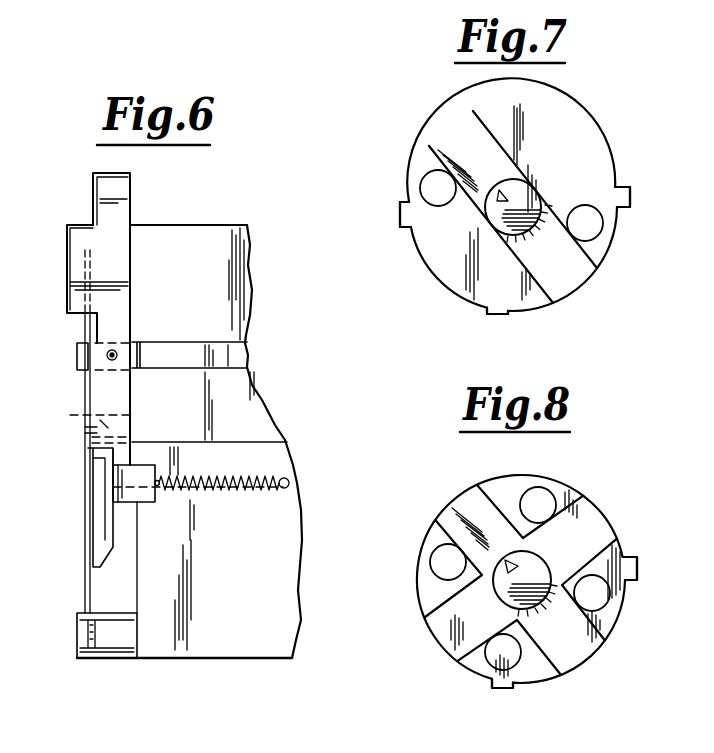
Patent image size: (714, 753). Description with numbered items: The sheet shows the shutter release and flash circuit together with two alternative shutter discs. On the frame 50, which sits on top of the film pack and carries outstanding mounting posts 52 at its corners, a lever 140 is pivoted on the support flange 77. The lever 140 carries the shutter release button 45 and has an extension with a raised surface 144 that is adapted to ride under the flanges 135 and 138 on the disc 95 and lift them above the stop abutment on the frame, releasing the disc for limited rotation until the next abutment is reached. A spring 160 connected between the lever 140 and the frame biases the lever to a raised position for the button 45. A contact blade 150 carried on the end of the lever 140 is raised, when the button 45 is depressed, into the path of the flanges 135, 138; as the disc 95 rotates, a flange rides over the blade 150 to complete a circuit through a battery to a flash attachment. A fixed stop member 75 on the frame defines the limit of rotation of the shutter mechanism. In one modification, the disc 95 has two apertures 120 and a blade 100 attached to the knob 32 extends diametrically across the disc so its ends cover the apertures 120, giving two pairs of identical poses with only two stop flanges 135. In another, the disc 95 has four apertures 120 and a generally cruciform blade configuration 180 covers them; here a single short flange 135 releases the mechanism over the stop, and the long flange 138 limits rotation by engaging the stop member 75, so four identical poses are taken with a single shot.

In FIG. 6, the lever 140 is at (132, 210).
In FIG. 6, the shutter release button 45 is at (67, 272).
In FIG. 6, the support flange 77 is at (126, 352).
In FIG. 6, the stop member 75 is at (77, 350).
In FIG. 6, the raised surface 144 is at (100, 420).
In FIG. 6, the spring 160 is at (268, 482).
In FIG. 6, the contact blade 150 is at (110, 512).
In FIG. 6, the mounting posts 52 is at (78, 625).
In FIG. 6, the frame 50 is at (232, 660).
In FIG. 7, the disc 95 is at (588, 135).
In FIG. 8, the disc 95 is at (428, 601).
In FIG. 7, the blade 100 is at (458, 162).
In FIG. 7, the apertures 120 is at (419, 188).
In FIG. 8, the apertures 120 is at (548, 492).
In FIG. 7, the stop flange 135 is at (400, 218).
In FIG. 8, the stop flange 135 is at (495, 688).
In FIG. 7, the knob 32 is at (537, 195).
In FIG. 8, the knob 32 is at (550, 556).
In FIG. 7, the stop flange 138 is at (630, 196).
In FIG. 8, the stop flange 138 is at (637, 568).
In FIG. 8, the blade configuration 180 is at (592, 652).